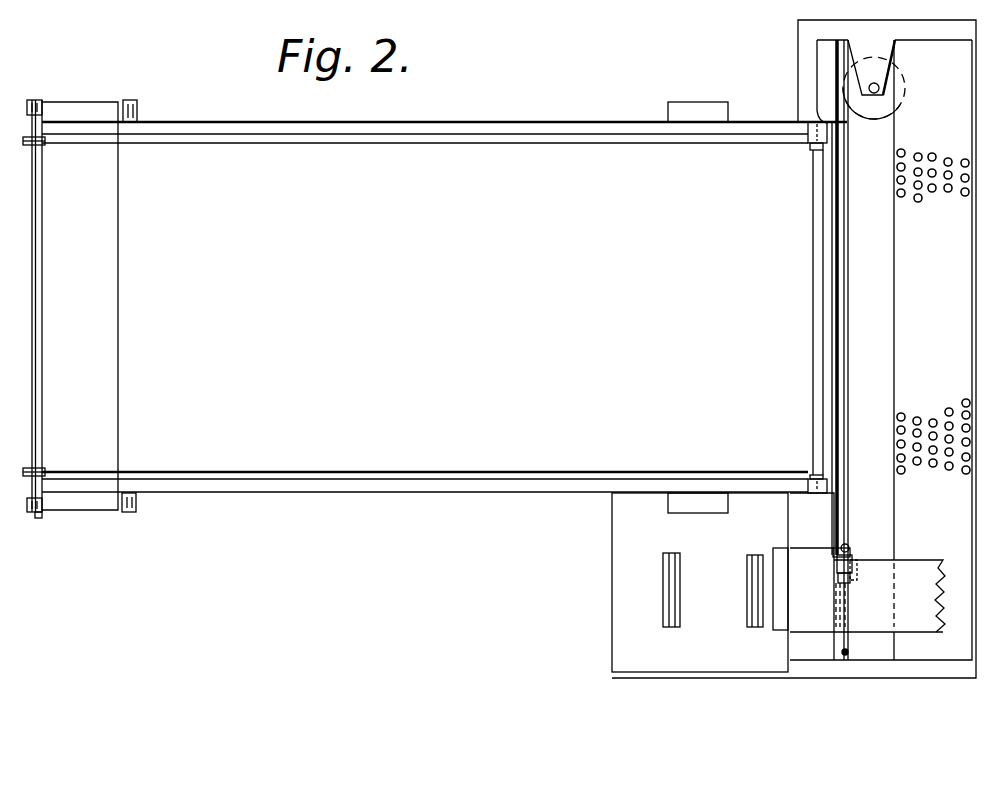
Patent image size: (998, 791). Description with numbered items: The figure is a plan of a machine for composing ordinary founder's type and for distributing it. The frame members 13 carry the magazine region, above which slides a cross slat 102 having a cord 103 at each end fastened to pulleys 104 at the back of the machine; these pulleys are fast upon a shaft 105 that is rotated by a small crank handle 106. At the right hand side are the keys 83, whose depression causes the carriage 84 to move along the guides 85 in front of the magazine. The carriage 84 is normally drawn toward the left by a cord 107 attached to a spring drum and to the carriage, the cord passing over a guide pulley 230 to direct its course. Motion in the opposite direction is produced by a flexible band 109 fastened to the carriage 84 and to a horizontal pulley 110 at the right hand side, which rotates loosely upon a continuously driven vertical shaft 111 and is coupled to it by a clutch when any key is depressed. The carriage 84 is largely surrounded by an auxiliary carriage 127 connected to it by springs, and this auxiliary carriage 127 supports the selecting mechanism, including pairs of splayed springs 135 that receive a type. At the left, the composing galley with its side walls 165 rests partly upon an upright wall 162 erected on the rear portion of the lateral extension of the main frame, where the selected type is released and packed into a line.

The frame side rail 13 is at (193, 122).
The keys 83 is at (948, 158).
The carriage 84 is at (850, 548).
The guides 85 is at (840, 275).
The cross slat 102 is at (813, 197).
The cord 103 is at (336, 143).
The pulleys 104 is at (45, 145).
The shaft 105 is at (43, 306).
The crank handle 106 is at (42, 517).
The cord 107 is at (850, 589).
The flexible band 109 is at (846, 177).
The horizontal pulley 110 is at (868, 118).
The vertical shaft 111 is at (910, 75).
The auxiliary carriage 127 is at (835, 555).
The springs 135 is at (840, 574).
The upright wall 162 is at (783, 557).
The side walls 165 is at (922, 560).
The guide pulley 230 is at (842, 651).